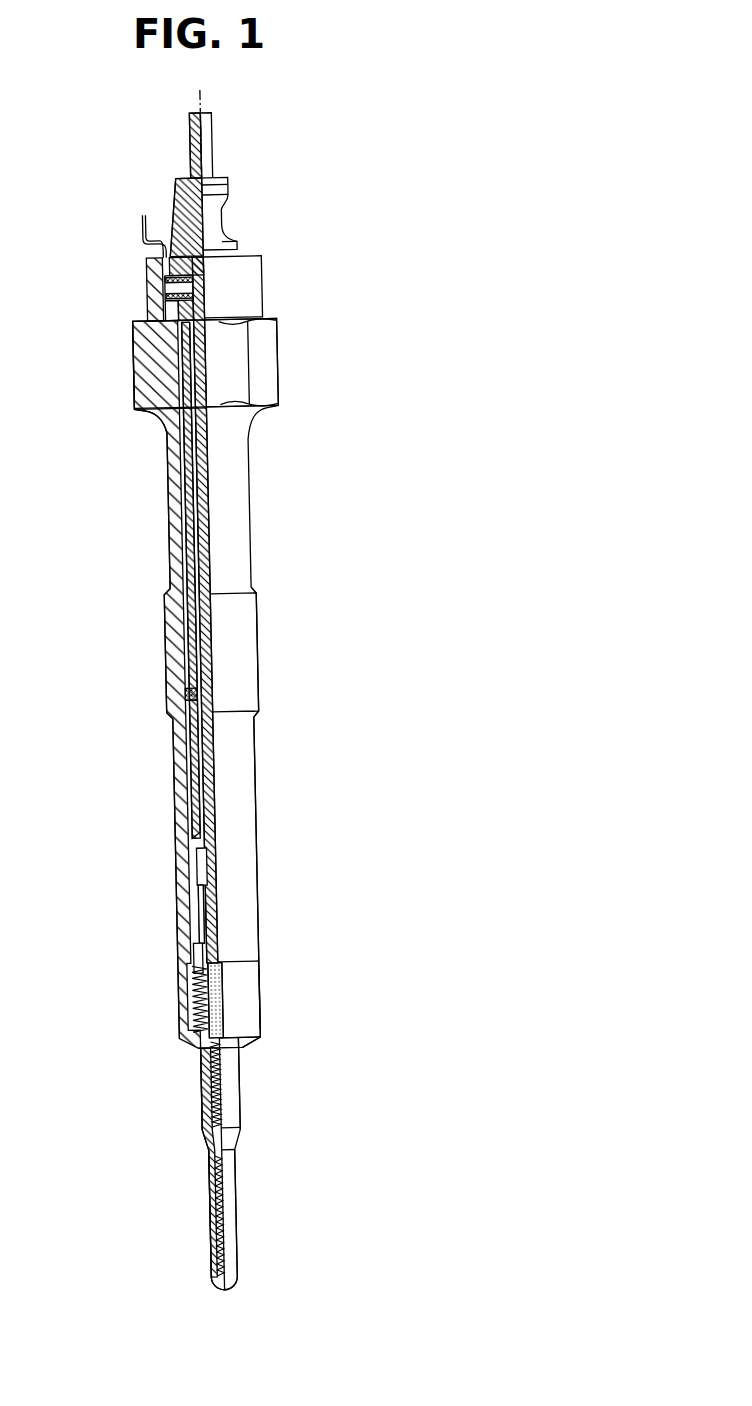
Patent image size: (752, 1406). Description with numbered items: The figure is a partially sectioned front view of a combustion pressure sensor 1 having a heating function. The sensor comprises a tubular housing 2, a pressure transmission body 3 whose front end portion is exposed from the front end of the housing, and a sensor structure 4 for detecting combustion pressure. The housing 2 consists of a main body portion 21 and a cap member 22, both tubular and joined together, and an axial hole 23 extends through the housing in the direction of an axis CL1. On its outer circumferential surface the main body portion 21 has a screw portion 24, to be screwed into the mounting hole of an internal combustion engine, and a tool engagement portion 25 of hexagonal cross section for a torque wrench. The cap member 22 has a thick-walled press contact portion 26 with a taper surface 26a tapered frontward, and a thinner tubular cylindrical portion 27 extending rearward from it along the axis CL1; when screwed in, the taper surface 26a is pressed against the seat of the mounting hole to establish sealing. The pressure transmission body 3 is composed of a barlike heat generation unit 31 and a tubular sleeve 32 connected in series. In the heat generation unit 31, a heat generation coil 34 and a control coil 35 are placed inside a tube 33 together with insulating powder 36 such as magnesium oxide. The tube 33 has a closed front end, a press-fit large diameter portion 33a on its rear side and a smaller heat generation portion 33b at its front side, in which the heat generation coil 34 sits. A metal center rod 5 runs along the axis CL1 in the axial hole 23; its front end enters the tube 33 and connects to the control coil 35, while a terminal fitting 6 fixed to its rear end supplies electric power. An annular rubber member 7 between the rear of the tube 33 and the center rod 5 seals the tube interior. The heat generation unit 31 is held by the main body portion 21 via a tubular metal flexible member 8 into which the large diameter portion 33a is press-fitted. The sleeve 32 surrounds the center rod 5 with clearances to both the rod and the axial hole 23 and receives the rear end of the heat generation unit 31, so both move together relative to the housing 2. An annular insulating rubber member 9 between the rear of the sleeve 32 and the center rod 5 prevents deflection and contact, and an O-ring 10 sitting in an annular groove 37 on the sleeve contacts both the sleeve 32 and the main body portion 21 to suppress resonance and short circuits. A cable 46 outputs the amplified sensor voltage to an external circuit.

The combustion pressure sensor 1 is at (394, 232).
The housing 2 is at (397, 955).
The pressure transmission body 3 is at (90, 912).
The sensor structure 4 is at (263, 268).
The center rod 5 is at (200, 538).
The terminal fitting 6 is at (213, 150).
The rubber member 7 is at (209, 878).
The flexible member 8 is at (186, 996).
The insulating rubber member 9 is at (205, 290).
The O-ring 10 is at (188, 690).
The main body portion 21 is at (261, 951).
The cap member 22 is at (328, 988).
The axial hole 23 is at (183, 490).
The screw portion 24 is at (259, 645).
The tool engagement portion 25 is at (278, 364).
The press contact portion 26 is at (261, 1033).
The taper surface 26a is at (257, 1043).
The cylindrical portion 27 is at (260, 1000).
The heat generation unit 31 is at (197, 942).
The sleeve 32 is at (190, 902).
The tube 33 is at (205, 1196).
The press-fit large diameter portion 33a is at (240, 1100).
The heat generation portion 33b is at (240, 1248).
The heat generation coil 34 is at (212, 1232).
The control coil 35 is at (204, 1091).
The insulating powder 36 is at (206, 1060).
The groove 37 is at (190, 701).
The cable 46 is at (143, 214).
The axis CL1 is at (205, 107).